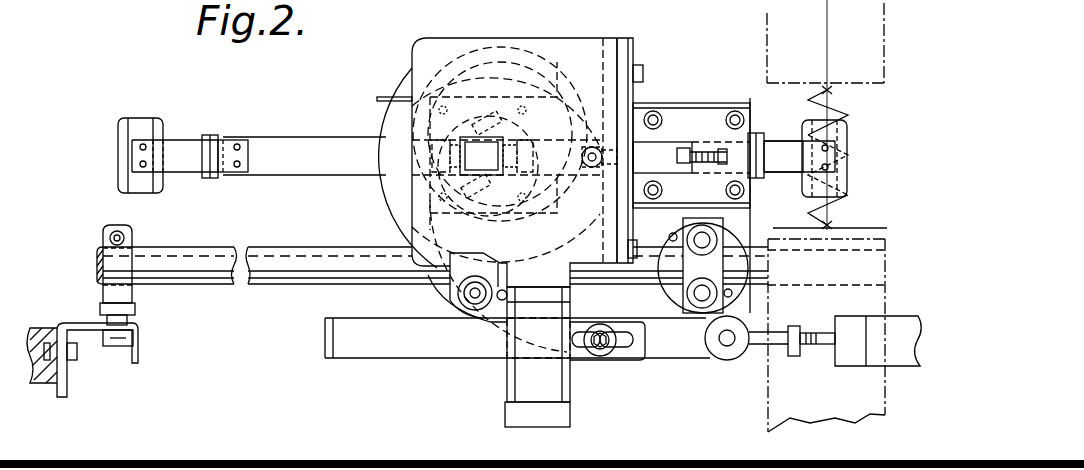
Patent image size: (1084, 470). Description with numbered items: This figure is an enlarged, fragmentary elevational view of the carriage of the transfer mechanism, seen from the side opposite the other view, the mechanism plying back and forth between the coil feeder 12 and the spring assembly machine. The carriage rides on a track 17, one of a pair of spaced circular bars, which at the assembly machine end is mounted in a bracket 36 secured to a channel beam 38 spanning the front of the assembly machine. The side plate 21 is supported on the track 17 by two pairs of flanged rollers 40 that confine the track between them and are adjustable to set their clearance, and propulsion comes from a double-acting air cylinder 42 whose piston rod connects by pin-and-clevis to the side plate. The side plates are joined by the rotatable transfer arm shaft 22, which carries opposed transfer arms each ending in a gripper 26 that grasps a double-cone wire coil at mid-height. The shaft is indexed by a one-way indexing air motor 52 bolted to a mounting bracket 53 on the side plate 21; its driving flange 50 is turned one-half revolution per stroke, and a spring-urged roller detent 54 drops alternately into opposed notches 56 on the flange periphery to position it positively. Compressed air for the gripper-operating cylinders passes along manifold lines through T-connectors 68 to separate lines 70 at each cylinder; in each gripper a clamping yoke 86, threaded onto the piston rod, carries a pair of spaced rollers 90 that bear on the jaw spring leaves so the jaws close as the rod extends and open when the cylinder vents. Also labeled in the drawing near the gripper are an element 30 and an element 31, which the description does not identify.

The coil feeder 12 is at (782, 395).
The track 17 is at (282, 253).
The side plate 21 is at (686, 360).
The transfer arm shaft 22 is at (386, 123).
The gripper 26 is at (141, 116).
The support bracket 30 is at (884, 64).
The spring 31 is at (846, 178).
The bracket 36 is at (134, 296).
The channel beam 38 is at (54, 322).
The flanged rollers 40 is at (662, 290).
The double-acting air cylinder 42 is at (897, 325).
The driving flange 50 is at (380, 204).
The indexing air motor 52 is at (573, 47).
The mounting bracket 53 is at (668, 100).
The roller detent 54 is at (672, 145).
The notches 56 is at (383, 150).
The T-connector 68 is at (478, 118).
The lines 70 is at (503, 95).
The clamping yoke 86 is at (219, 134).
The rollers 90 is at (206, 155).